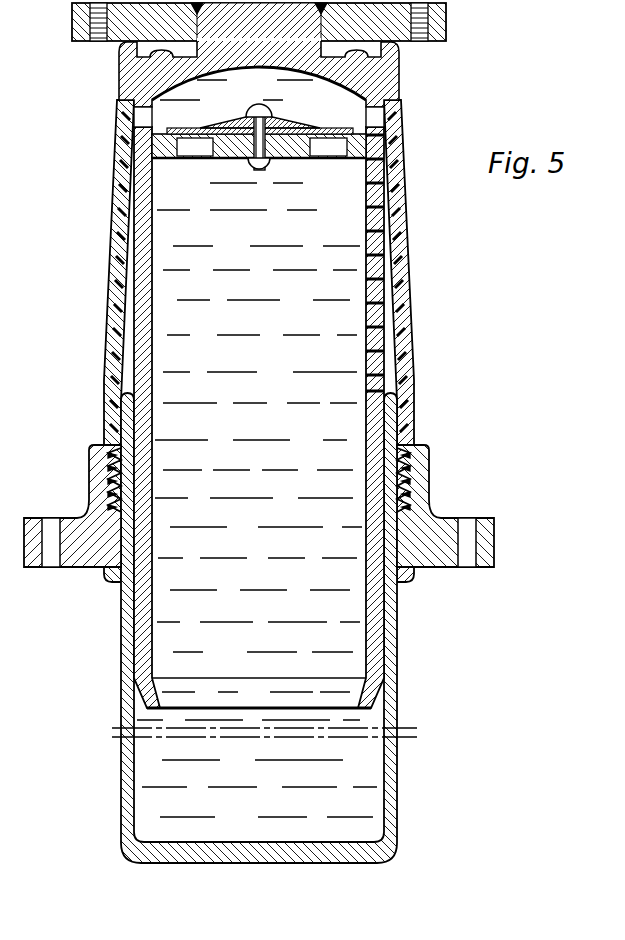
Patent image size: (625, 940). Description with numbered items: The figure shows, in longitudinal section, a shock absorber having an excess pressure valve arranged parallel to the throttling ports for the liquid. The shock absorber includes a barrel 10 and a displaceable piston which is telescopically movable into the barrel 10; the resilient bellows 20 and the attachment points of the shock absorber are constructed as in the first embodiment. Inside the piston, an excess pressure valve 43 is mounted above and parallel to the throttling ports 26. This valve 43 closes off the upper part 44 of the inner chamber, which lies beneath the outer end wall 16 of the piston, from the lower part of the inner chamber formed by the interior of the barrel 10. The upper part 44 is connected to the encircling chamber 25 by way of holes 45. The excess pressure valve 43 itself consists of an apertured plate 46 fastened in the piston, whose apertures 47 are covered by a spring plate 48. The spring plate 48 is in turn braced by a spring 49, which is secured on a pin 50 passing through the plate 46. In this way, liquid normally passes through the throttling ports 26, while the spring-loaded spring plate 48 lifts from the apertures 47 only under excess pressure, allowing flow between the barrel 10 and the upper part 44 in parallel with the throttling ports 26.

The barrel 10 is at (390, 798).
The outer end wall 16 is at (333, 68).
The resilient bellows 20 is at (408, 337).
The encircling chamber 25 is at (390, 384).
The throttling ports 26 is at (386, 210).
The excess pressure valve 43 is at (313, 165).
The upper part of the inner chamber 44 is at (177, 87).
The holes 45 is at (137, 113).
The apertured plate 46 is at (233, 152).
The apertures 47 is at (192, 152).
The spring plate 48 is at (345, 129).
The spring 49 is at (298, 122).
The pin 50 is at (260, 104).